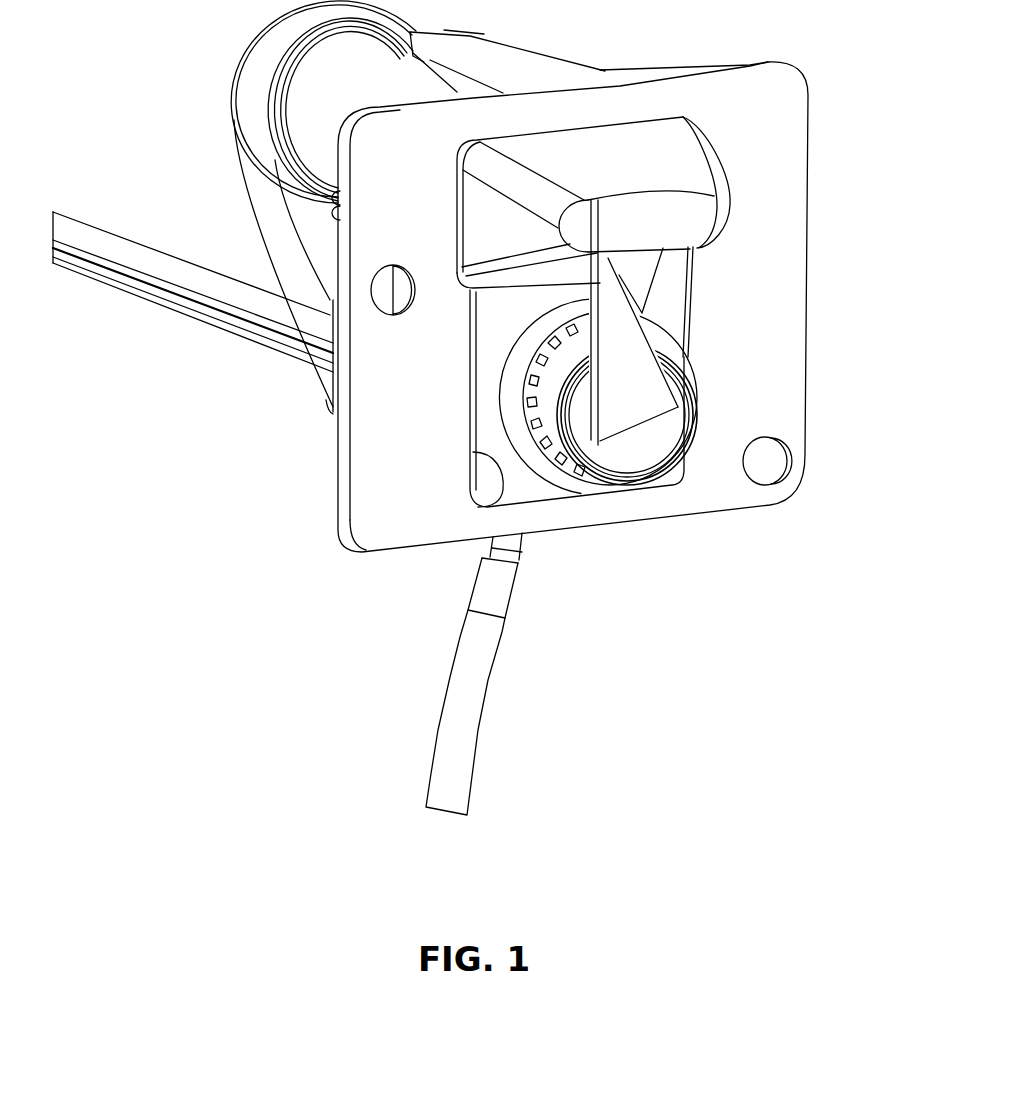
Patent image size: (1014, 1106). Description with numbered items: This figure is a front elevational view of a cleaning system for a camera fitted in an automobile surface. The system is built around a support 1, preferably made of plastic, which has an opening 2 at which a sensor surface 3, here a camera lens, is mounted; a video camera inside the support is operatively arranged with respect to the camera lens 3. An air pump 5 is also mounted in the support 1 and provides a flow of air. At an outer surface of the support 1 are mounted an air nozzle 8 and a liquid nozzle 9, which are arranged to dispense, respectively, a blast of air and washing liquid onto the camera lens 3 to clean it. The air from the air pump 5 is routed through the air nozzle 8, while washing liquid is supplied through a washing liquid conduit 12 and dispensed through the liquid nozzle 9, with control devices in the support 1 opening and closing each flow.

The support 1 is at (750, 178).
The opening 2 is at (470, 511).
The sensor surface 3 is at (645, 436).
The air pump 5 is at (332, 96).
The air nozzle 8 is at (623, 267).
The liquid nozzle 9 is at (703, 252).
The washing liquid conduit 12 is at (467, 679).